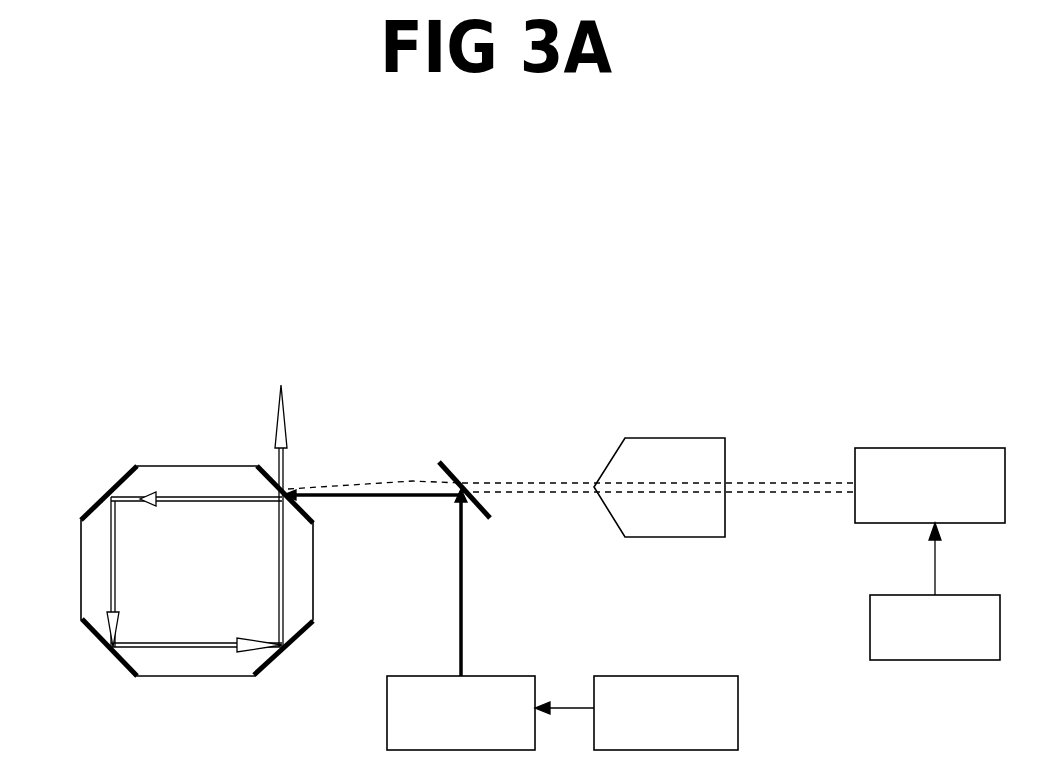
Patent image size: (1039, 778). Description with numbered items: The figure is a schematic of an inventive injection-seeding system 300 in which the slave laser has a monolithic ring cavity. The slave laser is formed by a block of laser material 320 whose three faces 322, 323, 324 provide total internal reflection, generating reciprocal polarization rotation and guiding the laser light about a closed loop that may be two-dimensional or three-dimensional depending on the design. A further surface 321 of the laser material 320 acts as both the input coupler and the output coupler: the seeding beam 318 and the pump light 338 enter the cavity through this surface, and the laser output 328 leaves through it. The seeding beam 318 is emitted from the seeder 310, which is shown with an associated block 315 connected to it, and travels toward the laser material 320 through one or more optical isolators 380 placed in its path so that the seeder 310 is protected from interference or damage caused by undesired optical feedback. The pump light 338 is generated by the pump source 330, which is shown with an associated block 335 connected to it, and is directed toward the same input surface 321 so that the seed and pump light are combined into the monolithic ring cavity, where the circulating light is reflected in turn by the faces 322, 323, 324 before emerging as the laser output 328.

The injection-seeding system 300 is at (699, 227).
The seeder 310 is at (930, 485).
The controller 315 is at (935, 591).
The seeding beam 318 is at (502, 478).
The laser material 320 is at (197, 571).
The surface 321 is at (372, 513).
The face 322 is at (95, 481).
The face 323 is at (91, 648).
The face 324 is at (298, 657).
The laser output 328 is at (313, 439).
The pump source 330 is at (461, 713).
The pump controller 335 is at (636, 713).
The pump light 338 is at (497, 582).
The optical isolator 380 is at (659, 487).